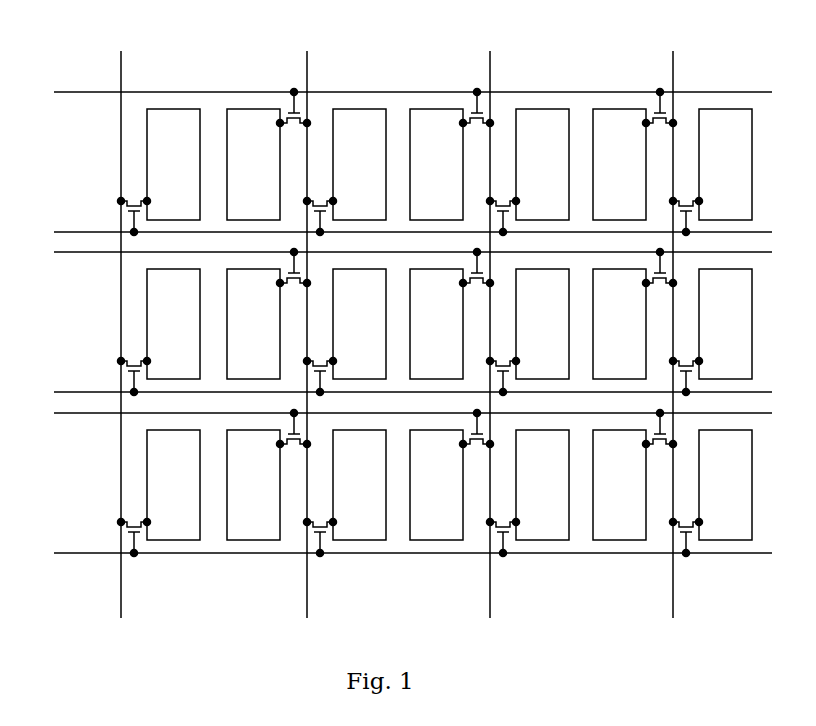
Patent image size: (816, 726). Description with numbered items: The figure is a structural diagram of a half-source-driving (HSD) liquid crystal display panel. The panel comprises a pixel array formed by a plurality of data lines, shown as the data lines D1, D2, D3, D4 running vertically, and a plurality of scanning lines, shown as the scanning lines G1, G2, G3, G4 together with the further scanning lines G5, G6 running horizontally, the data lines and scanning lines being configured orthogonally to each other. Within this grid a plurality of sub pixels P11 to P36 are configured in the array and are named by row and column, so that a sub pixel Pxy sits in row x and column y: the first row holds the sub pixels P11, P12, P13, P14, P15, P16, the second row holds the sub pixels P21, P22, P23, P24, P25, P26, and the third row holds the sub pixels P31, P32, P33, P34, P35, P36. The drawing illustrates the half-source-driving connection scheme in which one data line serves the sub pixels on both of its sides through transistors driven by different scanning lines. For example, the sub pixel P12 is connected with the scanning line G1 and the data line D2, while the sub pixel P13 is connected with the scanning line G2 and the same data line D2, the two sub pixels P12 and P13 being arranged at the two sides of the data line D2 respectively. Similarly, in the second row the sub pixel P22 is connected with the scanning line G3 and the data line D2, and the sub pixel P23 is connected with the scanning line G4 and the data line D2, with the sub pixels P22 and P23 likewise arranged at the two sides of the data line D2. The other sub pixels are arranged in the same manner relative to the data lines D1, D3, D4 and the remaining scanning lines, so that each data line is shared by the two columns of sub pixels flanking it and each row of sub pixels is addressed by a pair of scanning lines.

The data line D1 is at (127, 318).
The data line D2 is at (308, 318).
The data line D3 is at (490, 318).
The data line D4 is at (672, 318).
The scanning line G1 is at (395, 92).
The scanning line G2 is at (395, 233).
The scanning line G3 is at (395, 253).
The scanning line G4 is at (395, 393).
The fifth gate line G5 is at (395, 414).
The sixth gate line G6 is at (398, 553).
The sub pixel P11 is at (173, 164).
The sub pixel P12 is at (253, 164).
The sub pixel P13 is at (359, 164).
The sub pixel P14 is at (436, 164).
The sub pixel P15 is at (542, 164).
The sub pixel P16 is at (619, 164).
The sub pixel P21 is at (173, 324).
The sub pixel P22 is at (253, 324).
The sub pixel P23 is at (359, 324).
The sub pixel P24 is at (436, 324).
The sub pixel P25 is at (542, 324).
The sub pixel P26 is at (619, 324).
The sub pixel P31 is at (173, 485).
The sub pixel P32 is at (253, 485).
The sub pixel P33 is at (359, 485).
The sub pixel P34 is at (436, 485).
The sub pixel P35 is at (542, 485).
The sub pixel P36 is at (619, 485).